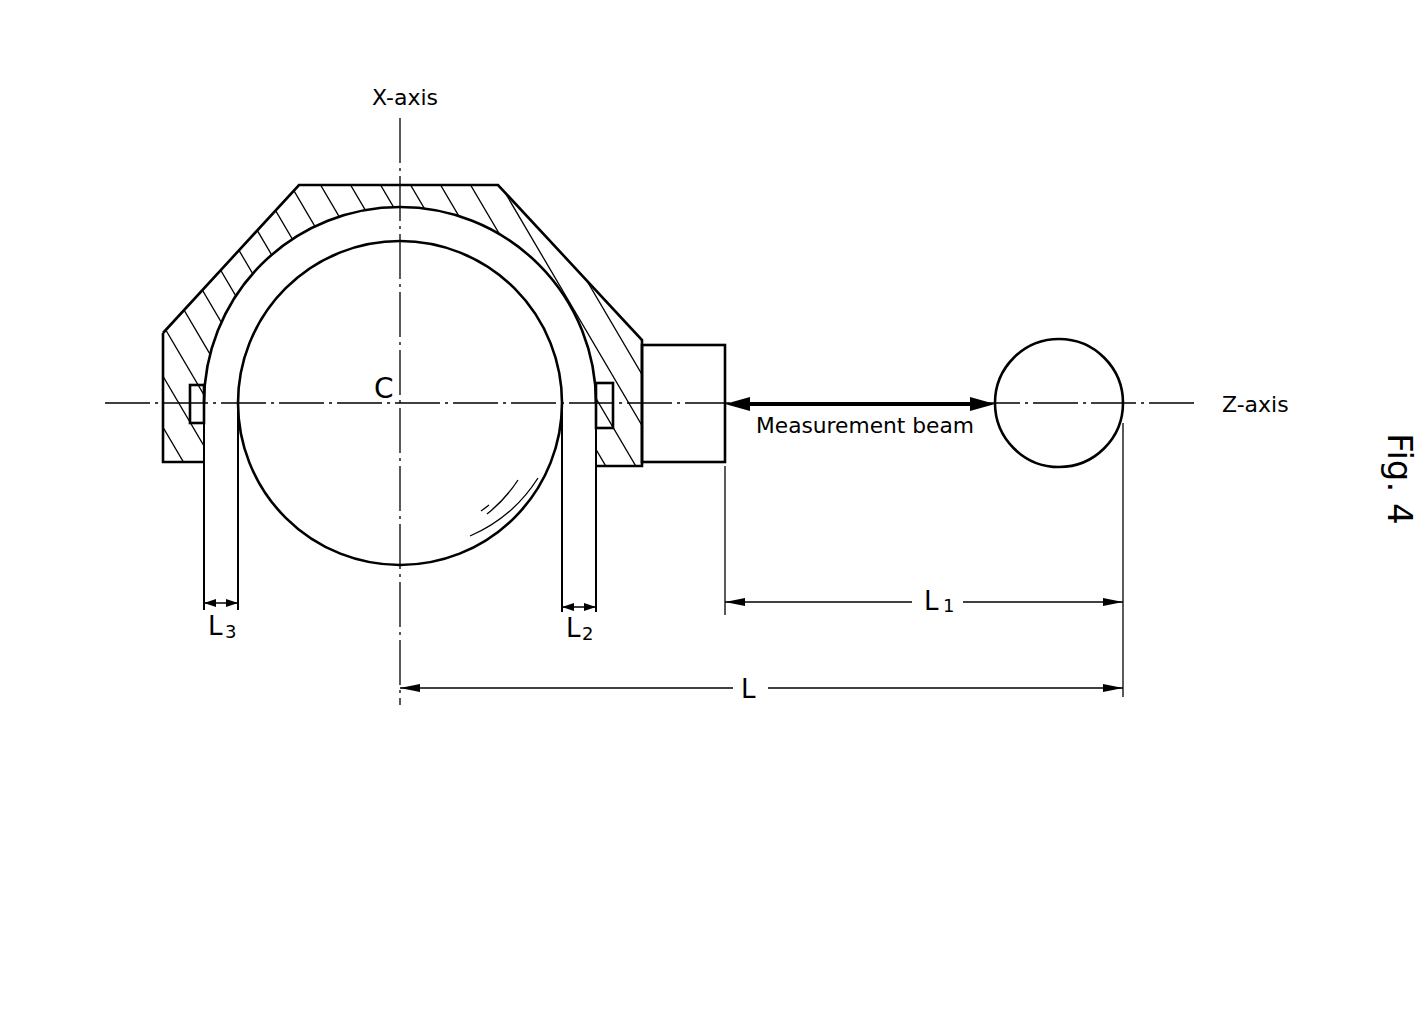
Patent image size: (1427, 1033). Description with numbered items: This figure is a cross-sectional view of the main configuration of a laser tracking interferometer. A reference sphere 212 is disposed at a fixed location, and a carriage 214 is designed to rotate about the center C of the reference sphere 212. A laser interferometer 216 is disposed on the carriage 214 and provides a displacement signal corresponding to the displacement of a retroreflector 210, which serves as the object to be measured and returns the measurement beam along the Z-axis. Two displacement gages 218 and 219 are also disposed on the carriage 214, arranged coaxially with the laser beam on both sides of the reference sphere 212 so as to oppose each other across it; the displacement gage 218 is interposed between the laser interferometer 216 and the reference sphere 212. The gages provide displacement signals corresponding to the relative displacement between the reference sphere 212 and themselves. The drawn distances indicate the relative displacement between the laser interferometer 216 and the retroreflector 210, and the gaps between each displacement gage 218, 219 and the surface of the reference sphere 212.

The retroreflector 210 is at (1050, 348).
The reference sphere 212 is at (500, 305).
The carriage 214 is at (485, 200).
The laser interferometer 216 is at (700, 350).
The displacement gage 218 is at (605, 385).
The displacement gage 219 is at (197, 410).